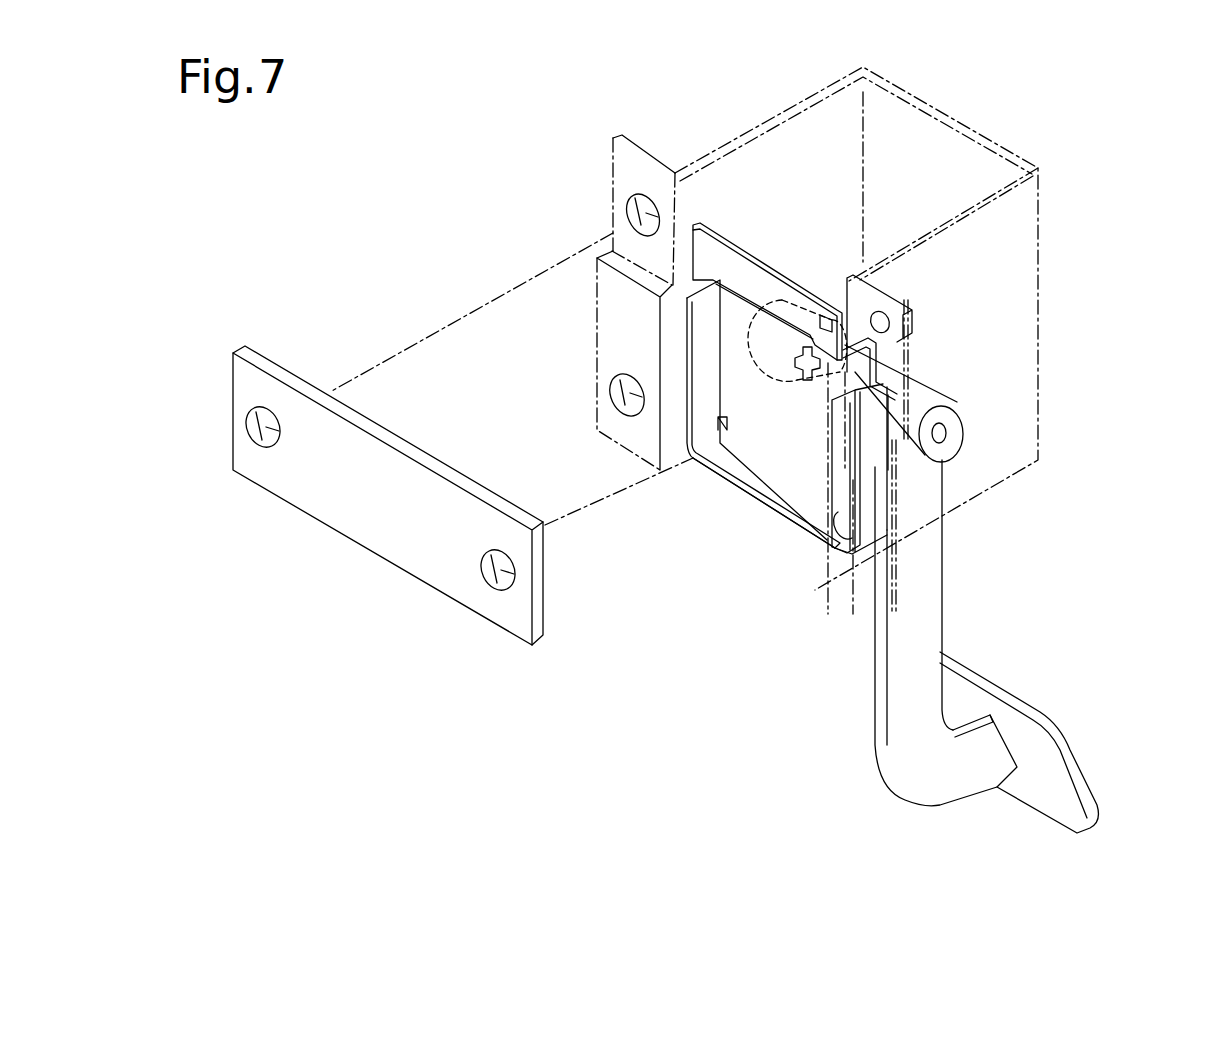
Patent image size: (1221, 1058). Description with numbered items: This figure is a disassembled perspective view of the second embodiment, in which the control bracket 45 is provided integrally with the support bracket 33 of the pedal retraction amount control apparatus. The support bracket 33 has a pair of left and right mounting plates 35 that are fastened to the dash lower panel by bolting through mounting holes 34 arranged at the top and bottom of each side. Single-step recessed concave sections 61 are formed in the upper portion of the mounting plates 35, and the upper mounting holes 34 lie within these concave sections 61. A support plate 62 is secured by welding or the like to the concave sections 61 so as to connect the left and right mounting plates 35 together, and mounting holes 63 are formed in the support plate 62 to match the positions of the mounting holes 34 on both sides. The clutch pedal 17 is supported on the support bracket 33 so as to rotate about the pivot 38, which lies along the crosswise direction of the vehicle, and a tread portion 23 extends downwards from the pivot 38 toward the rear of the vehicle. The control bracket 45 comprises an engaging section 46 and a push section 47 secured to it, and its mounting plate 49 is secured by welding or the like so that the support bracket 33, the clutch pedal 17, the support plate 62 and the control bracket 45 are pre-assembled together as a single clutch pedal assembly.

The clutch pedal 17 is at (891, 776).
The tread portion 23 is at (1073, 770).
The support bracket 33 is at (1032, 264).
The mounting holes 34 is at (638, 210).
The mounting plates 35 is at (598, 388).
The pivot 38 is at (963, 410).
The control bracket 45 is at (793, 507).
The engaging section 46 is at (772, 442).
The push section 47 is at (942, 475).
The mounting plate 49 is at (745, 277).
The concave sections 61 is at (613, 178).
The support plate 62 is at (400, 532).
The mounting holes 63 is at (263, 437).